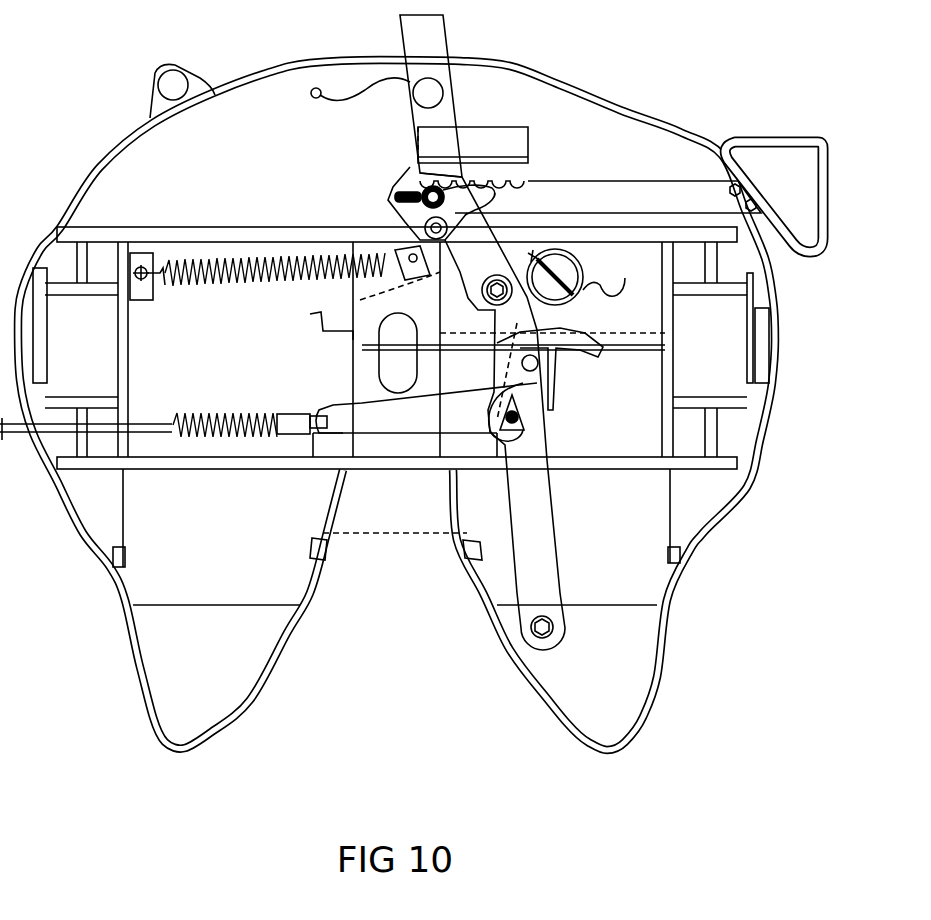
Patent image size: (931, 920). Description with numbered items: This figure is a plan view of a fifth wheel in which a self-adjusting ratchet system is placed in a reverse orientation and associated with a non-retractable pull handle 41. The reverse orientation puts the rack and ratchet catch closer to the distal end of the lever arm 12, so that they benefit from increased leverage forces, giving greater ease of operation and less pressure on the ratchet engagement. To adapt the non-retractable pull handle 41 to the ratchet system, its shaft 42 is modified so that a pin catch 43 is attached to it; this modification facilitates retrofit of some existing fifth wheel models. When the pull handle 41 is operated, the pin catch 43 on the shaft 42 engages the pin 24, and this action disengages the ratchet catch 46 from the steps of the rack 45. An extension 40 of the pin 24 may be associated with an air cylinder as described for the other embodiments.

The lever arm 12 is at (553, 527).
The pin 24 is at (410, 186).
The extension 40 is at (462, 218).
The pull handle 41 is at (768, 140).
The shaft 42 is at (633, 177).
The pin catch 43 is at (400, 222).
The rack 45 is at (492, 172).
The ratchet catch 46 is at (520, 205).